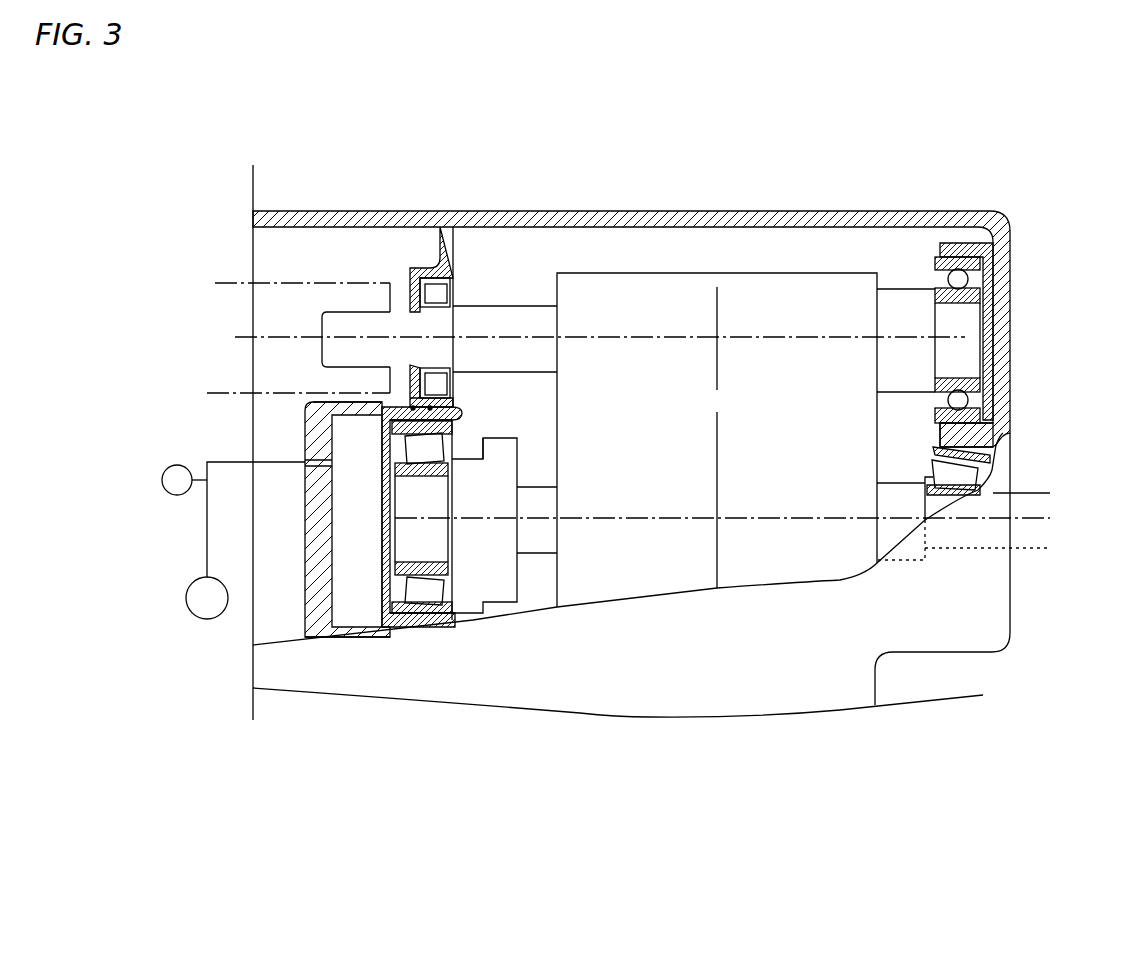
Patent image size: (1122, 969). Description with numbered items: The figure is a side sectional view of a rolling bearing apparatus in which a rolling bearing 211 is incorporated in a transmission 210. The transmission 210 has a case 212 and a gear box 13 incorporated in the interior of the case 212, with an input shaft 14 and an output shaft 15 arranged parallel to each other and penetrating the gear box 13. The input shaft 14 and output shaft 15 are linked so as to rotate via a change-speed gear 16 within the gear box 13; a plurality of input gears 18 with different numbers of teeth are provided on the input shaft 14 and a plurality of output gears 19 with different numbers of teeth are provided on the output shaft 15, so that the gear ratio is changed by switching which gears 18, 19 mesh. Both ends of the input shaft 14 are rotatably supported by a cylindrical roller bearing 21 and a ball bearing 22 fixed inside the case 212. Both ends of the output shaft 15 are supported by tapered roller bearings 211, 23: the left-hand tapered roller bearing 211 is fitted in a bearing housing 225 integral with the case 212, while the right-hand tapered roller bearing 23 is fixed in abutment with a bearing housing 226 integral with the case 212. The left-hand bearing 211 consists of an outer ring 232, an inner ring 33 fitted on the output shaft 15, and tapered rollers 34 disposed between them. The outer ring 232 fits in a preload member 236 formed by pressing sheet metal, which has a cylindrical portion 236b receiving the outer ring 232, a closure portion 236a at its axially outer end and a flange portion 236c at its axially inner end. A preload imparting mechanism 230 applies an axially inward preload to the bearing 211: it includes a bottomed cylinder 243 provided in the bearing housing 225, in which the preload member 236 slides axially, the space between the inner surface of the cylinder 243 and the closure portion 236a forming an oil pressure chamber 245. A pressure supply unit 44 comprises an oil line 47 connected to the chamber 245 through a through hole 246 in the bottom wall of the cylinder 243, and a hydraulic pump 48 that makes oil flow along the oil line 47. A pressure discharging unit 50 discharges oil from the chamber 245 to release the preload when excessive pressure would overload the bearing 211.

The transmission 210 is at (752, 175).
The case 212 is at (775, 212).
The gear box 13 is at (653, 273).
The input shaft 14 is at (352, 327).
The output shaft 15 is at (455, 547).
The change-speed gear 16 is at (728, 548).
The input gears 18 is at (717, 363).
The output gears 19 is at (717, 465).
The cylindrical roller bearing 21 is at (465, 290).
The ball bearing 22 is at (928, 283).
The tapered roller bearing 23 is at (983, 478).
The inner ring 33 is at (425, 470).
The tapered rollers 34 is at (483, 448).
The pressure supply unit 44 is at (178, 598).
The oil line 47 is at (203, 515).
The hydraulic pump 48 is at (195, 617).
The pressure discharging unit 50 is at (160, 480).
The rolling bearing 211 is at (442, 543).
The bearing housing 225 is at (313, 400).
The bearing housing 226 is at (990, 435).
The preload imparting mechanism 230 is at (296, 452).
The outer ring 232 is at (455, 428).
The preload member 236 is at (378, 535).
The closure portion 236a is at (373, 577).
The cylindrical portion 236b is at (396, 400).
The flange portion 236c is at (455, 400).
The cylinder 243 is at (330, 636).
The oil pressure chamber 245 is at (343, 575).
The through hole 246 is at (313, 462).